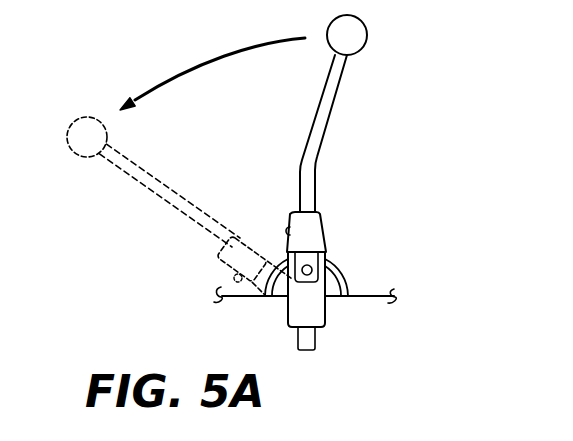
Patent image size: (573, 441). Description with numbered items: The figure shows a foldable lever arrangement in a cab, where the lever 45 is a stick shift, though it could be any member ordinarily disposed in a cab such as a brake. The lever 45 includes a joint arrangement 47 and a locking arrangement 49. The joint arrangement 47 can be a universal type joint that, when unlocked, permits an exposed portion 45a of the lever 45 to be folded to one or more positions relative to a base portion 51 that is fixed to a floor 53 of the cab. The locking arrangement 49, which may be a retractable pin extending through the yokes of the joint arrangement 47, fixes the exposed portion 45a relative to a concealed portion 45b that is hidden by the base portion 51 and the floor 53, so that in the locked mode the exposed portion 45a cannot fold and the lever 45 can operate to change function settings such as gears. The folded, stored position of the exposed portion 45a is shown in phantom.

The lever 45 is at (383, 165).
The exposed portion 45a is at (333, 107).
The concealed portion 45b is at (317, 333).
The joint arrangement 47 is at (332, 280).
The locking arrangement 49 is at (283, 232).
The base portion 51 is at (340, 257).
The floor 53 is at (232, 295).